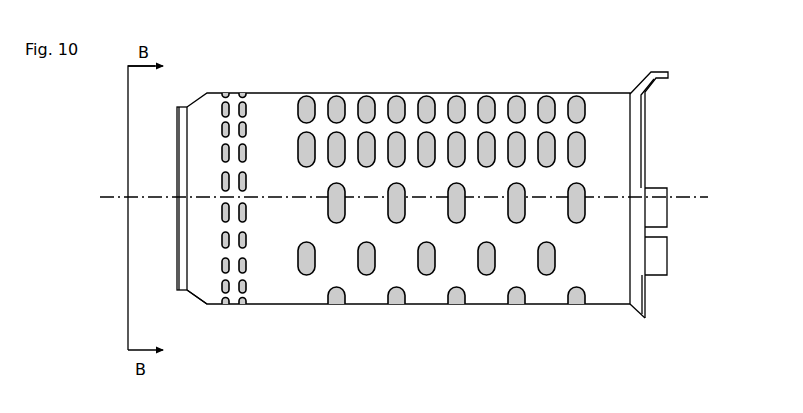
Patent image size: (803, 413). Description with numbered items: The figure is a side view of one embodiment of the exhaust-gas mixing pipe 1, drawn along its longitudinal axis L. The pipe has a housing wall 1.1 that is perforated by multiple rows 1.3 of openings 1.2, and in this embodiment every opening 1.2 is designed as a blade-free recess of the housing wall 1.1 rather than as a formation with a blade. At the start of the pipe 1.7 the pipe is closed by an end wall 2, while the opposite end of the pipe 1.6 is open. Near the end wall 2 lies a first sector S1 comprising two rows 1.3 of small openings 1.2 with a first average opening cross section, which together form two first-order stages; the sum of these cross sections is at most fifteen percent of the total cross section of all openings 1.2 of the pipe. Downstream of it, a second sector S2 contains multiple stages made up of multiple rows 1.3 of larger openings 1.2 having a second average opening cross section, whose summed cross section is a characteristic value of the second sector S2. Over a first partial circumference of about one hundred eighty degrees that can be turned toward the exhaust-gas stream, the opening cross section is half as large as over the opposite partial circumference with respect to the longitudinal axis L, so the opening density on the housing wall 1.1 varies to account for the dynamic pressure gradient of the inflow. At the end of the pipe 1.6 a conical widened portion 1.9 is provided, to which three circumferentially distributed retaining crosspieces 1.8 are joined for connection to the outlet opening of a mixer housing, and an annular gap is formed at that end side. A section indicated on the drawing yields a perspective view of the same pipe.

The exhaust-gas mixing pipe 1 is at (472, 57).
The housing wall 1.1 is at (620, 160).
The opening 1.2 is at (487, 104).
The row of openings 1.3 is at (407, 65).
The end of the pipe 1.6 is at (645, 138).
The start of the pipe 1.7 is at (185, 268).
The retaining crosspiece 1.8 is at (663, 74).
The conical widened portion 1.9 is at (632, 315).
The end wall 2 is at (182, 162).
The first sector S1 is at (248, 306).
The second sector S2 is at (592, 316).
The longitudinal axis L is at (700, 197).